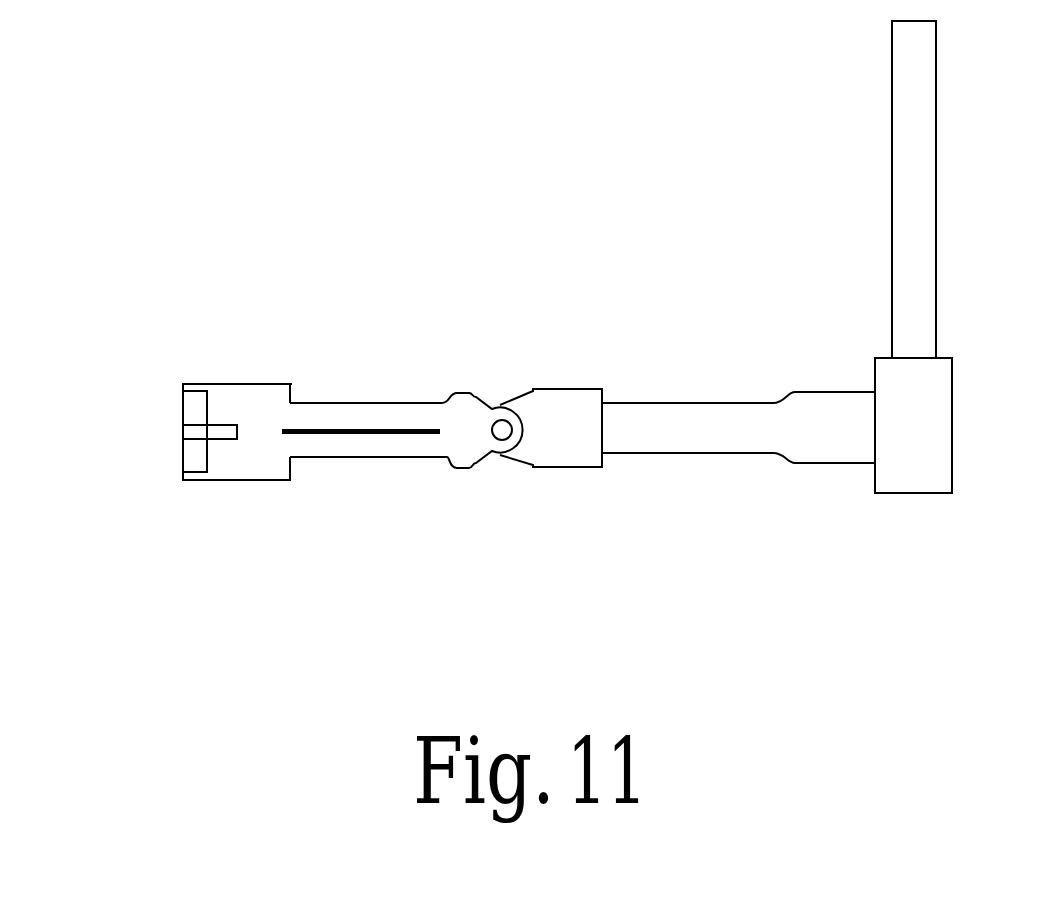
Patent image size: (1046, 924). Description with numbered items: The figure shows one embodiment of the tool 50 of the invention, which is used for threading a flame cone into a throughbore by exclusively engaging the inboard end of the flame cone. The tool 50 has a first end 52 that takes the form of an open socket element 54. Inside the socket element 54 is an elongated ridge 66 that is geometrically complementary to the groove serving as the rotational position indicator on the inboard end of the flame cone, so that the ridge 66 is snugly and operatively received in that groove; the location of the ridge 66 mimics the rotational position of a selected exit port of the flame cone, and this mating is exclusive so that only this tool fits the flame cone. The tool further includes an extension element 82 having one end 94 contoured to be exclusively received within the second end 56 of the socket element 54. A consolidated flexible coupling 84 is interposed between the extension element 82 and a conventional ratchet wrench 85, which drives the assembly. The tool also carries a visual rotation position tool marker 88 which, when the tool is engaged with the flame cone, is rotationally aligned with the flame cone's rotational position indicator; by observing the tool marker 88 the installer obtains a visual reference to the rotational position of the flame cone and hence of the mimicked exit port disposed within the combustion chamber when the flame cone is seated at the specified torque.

The tool 50 is at (559, 334).
The first end 52 is at (289, 508).
The socket element 54 is at (208, 384).
The second end 56 is at (183, 458).
The elongated ridge 66 is at (225, 433).
The extension element 82 is at (413, 458).
The consolidated flexible coupling 84 is at (639, 337).
The ratchet wrench 85 is at (892, 197).
The visual rotation position tool marker 88 is at (372, 428).
The end of the extension element 94 is at (292, 384).